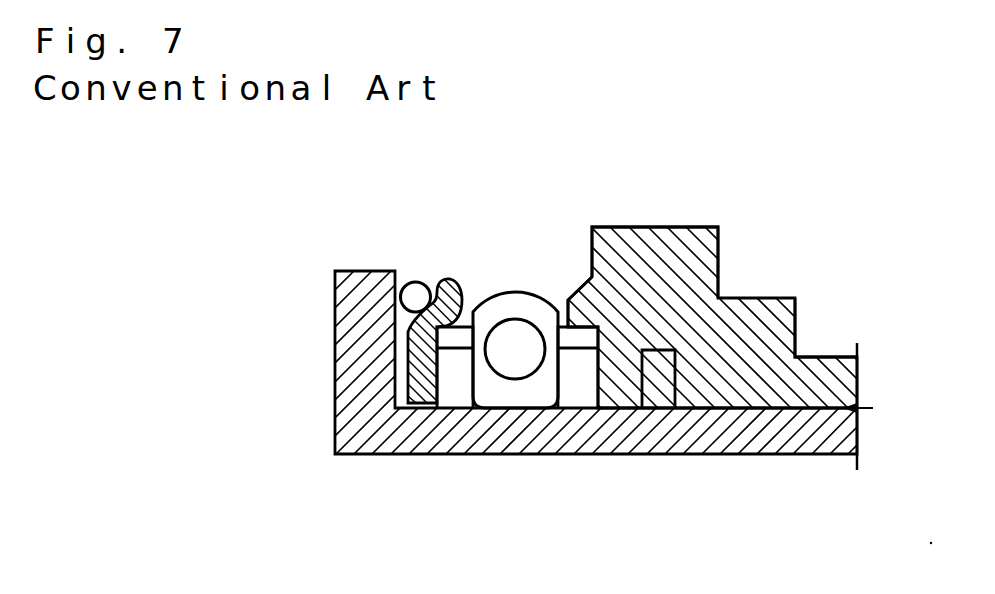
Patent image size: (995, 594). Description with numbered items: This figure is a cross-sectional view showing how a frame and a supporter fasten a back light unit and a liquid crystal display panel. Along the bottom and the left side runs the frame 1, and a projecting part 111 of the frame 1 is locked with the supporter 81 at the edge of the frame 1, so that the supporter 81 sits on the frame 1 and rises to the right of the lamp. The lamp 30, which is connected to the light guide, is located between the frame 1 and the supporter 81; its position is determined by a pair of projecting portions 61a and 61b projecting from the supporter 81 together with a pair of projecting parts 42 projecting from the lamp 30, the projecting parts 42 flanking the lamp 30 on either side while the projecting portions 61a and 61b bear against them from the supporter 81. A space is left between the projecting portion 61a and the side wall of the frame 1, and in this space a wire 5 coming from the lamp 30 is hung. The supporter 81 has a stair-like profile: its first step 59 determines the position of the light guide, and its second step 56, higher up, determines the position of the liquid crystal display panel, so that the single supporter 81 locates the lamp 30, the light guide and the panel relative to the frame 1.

The frame 1 is at (353, 443).
The wire 5 is at (412, 293).
The projecting portion 61a is at (448, 280).
The projecting portion 61b is at (570, 302).
The lamp 30 is at (518, 357).
The projecting part 42 is at (458, 337).
The supporter 81 is at (697, 265).
The second step 56 is at (719, 271).
The first step 59 is at (801, 318).
The projecting part 111 is at (655, 377).